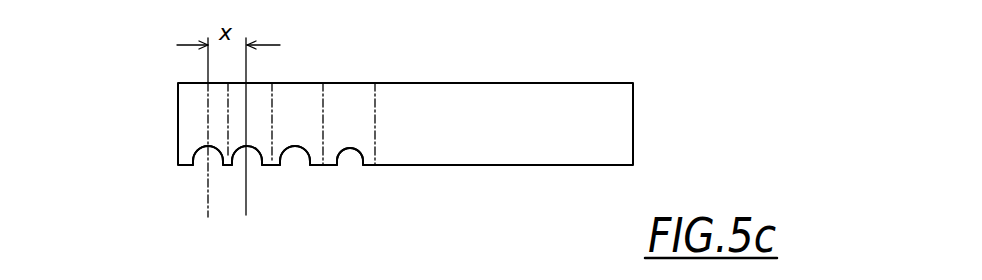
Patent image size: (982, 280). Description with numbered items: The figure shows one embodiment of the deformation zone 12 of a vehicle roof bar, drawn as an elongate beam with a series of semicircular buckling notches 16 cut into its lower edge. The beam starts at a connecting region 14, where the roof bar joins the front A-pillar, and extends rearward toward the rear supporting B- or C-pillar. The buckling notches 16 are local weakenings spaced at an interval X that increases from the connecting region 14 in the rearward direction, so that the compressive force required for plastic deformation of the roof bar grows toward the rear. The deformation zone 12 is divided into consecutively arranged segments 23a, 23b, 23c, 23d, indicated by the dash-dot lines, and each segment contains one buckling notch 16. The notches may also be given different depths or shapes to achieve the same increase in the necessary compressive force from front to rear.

The connecting region 14 is at (177, 118).
The buckling notches 16 is at (345, 150).
The deformation zone 12 is at (328, 105).
The segment 23a is at (188, 159).
The segment 23b is at (263, 99).
The segment 23c is at (313, 93).
The segment 23d is at (370, 98).